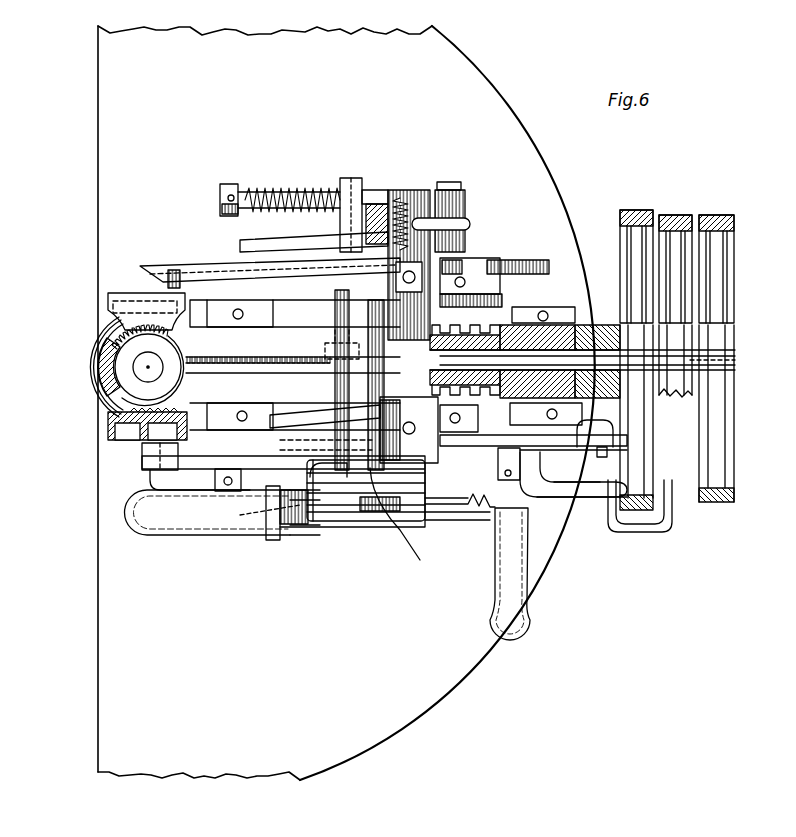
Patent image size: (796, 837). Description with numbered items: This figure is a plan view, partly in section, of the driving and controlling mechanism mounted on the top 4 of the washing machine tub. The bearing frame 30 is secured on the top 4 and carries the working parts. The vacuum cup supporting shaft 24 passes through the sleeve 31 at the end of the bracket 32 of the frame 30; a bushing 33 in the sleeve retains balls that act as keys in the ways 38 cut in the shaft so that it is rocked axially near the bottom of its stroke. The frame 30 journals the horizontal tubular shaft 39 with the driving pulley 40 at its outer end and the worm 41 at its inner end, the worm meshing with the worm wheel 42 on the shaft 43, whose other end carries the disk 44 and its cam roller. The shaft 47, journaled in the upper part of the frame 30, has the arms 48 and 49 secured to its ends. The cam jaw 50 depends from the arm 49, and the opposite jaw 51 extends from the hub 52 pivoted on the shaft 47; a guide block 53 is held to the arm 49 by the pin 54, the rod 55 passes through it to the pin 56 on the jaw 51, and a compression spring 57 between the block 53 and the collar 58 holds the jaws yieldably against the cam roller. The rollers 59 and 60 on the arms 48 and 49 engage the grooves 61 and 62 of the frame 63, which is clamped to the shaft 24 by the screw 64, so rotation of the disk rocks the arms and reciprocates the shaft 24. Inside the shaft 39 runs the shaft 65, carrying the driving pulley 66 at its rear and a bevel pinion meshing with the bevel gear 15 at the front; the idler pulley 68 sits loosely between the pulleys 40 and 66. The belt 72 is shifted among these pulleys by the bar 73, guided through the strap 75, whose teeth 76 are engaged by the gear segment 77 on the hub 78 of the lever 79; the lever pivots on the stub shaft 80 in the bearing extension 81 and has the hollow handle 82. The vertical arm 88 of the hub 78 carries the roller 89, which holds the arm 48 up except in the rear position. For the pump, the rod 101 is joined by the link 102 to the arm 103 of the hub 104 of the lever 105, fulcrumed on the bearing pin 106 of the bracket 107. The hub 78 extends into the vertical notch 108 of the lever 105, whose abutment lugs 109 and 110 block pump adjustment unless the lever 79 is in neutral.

The top 4 is at (112, 663).
The bevel gear 15 is at (95, 424).
The vacuum cup supporting shaft 24 is at (140, 358).
The bearing frame 30 is at (296, 327).
The sleeve 31 is at (122, 438).
The bracket 32 is at (262, 398).
The bushing 33 is at (160, 366).
The ways 38 is at (112, 326).
The horizontal tubular shaft 39 is at (575, 345).
The driving pulley 40 is at (620, 220).
The worm 41 is at (478, 310).
The worm wheel 42 is at (560, 320).
The shaft 43 is at (490, 258).
The disk 44 is at (540, 260).
The shaft 47 is at (418, 190).
The arm 48 is at (180, 469).
The arm 49 is at (226, 268).
The cam jaw 50 is at (368, 228).
The jaw 51 is at (468, 222).
The hub 52 is at (410, 240).
The guide block 53 is at (350, 178).
The pin 54 is at (360, 235).
The rod 55 is at (378, 190).
The pin 56 is at (462, 186).
The compression spring 57 is at (278, 188).
The collar 58 is at (228, 184).
The roller 59 is at (145, 478).
The roller 60 is at (145, 292).
The groove 61 is at (142, 458).
The groove 62 is at (113, 302).
The frame 63 is at (130, 380).
The screw 64 is at (105, 368).
The shaft 65 is at (735, 360).
The driving pulley 66 is at (728, 217).
The idler pulley 68 is at (700, 206).
The belt 72 is at (656, 200).
The bar 73 is at (588, 497).
The guide strap 75 is at (560, 472).
The teeth 76 is at (240, 515).
The gear segment 77 is at (268, 505).
The hub 78 is at (316, 424).
The lever 79 is at (424, 527).
The stub shaft 80 is at (338, 340).
The bearing extension 81 is at (330, 410).
The handle 82 is at (530, 598).
The vertical arm 88 is at (372, 410).
The roller 89 is at (418, 560).
The rod 101 is at (598, 420).
The link 102 is at (602, 457).
The arm 103 is at (528, 442).
The hub 104 is at (480, 520).
The lever 105 is at (124, 512).
The bearing pin 106 is at (495, 352).
The bracket 107 is at (478, 418).
The vertical notch 108 is at (342, 525).
The abutment lug 109 is at (290, 524).
The abutment lug 110 is at (384, 512).